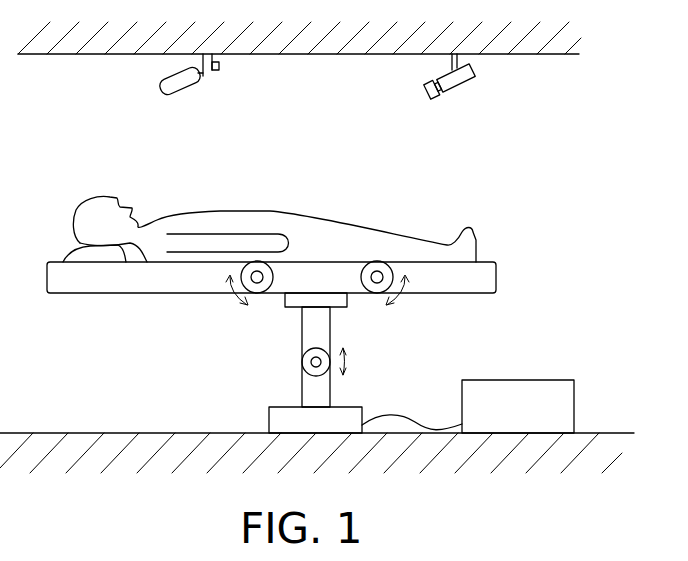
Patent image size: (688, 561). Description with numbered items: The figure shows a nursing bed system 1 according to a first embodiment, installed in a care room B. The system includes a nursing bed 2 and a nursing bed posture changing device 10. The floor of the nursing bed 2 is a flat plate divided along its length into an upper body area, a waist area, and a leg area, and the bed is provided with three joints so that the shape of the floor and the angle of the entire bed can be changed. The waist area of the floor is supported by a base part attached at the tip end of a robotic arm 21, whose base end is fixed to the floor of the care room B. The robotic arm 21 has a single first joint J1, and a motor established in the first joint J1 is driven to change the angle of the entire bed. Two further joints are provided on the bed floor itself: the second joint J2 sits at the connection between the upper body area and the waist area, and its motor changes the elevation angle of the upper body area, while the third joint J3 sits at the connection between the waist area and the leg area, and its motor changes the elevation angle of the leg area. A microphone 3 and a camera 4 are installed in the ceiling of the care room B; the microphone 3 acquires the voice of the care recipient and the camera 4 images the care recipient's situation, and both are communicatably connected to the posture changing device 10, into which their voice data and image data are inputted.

The nursing bed system 1 is at (293, 276).
The nursing bed 2 is at (87, 293).
The microphone 3 is at (185, 97).
The camera 4 is at (450, 95).
The posture changing device 10 is at (527, 380).
The robotic arm 21 is at (298, 390).
The first joint J1 is at (303, 358).
The second joint J2 is at (258, 297).
The third joint J3 is at (373, 297).
The care room B is at (82, 131).